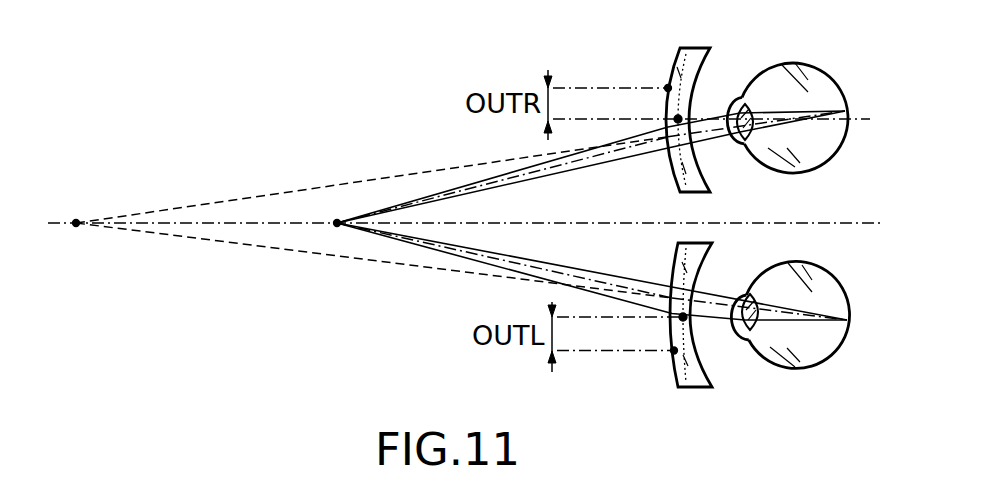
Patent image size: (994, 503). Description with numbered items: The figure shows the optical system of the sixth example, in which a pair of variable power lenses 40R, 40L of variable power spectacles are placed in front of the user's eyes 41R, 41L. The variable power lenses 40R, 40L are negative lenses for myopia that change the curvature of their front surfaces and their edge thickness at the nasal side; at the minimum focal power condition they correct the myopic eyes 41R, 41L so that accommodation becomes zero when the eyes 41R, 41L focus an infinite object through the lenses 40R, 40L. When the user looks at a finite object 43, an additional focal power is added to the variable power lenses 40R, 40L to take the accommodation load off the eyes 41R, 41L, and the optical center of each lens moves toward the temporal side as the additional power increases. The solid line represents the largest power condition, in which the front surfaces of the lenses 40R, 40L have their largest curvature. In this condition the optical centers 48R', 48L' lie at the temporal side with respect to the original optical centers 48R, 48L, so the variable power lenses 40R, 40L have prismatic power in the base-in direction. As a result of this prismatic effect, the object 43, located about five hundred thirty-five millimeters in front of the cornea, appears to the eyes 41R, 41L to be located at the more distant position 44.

The variable power lens 40R is at (672, 173).
The variable power lens 40L is at (677, 252).
The eye 41R is at (813, 35).
The eye 41L is at (782, 367).
The finite object 43 is at (337, 223).
The position 44 is at (76, 223).
The original optical center 48R is at (712, 88).
The optical center 48R' is at (631, 70).
The original optical center 48L is at (718, 348).
The optical center 48L' is at (655, 376).